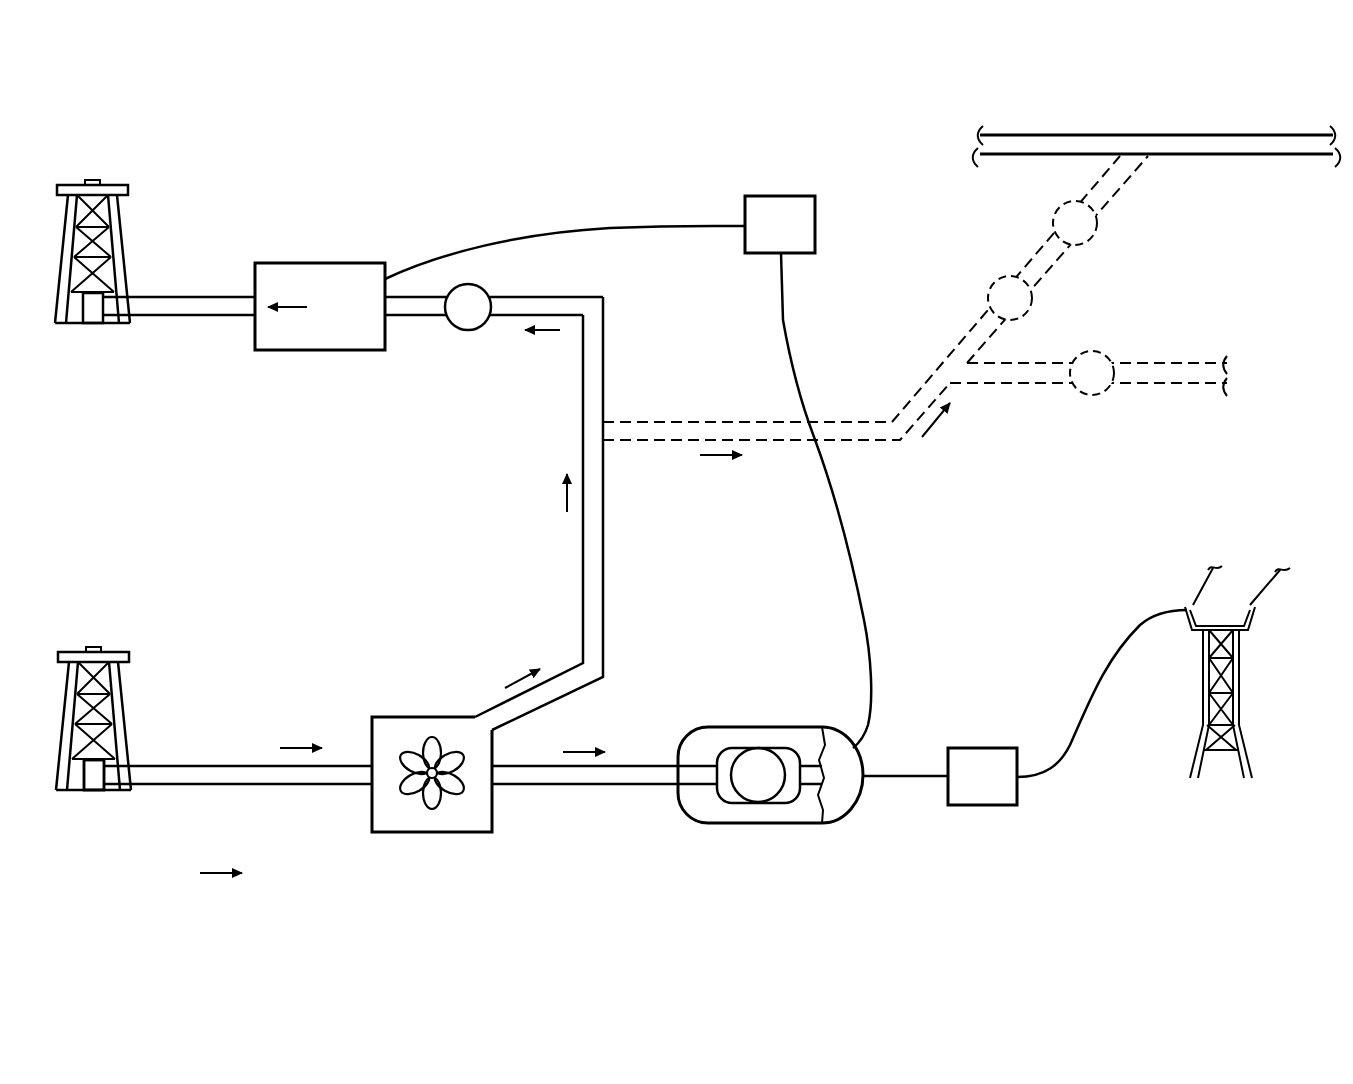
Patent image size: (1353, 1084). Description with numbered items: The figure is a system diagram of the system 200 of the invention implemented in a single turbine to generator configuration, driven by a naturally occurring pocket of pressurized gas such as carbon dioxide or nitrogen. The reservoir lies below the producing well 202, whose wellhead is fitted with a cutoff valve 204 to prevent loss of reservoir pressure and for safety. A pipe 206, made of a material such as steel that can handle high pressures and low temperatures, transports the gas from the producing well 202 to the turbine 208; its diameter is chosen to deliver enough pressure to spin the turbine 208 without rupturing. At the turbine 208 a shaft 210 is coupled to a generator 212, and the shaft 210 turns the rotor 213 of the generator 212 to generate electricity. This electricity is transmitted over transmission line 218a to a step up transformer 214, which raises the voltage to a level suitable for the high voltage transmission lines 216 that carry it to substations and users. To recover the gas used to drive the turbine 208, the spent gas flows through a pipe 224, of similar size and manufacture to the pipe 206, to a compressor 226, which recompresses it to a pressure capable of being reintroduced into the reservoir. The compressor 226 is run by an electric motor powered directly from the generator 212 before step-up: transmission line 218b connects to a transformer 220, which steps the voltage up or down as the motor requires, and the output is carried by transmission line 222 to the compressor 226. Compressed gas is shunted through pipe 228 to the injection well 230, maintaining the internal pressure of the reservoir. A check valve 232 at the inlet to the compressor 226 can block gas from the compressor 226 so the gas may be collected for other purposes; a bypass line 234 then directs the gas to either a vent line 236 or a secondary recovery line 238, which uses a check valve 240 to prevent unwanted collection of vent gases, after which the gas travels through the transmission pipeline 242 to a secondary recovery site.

The system 200 is at (380, 155).
The producing well 202 is at (127, 690).
The cutoff valve 204 is at (93, 794).
The pipe 206 is at (227, 764).
The turbine 208 is at (430, 717).
The shaft 210 is at (587, 785).
The generator 212 is at (795, 823).
The rotor 213 is at (748, 748).
The step up transformer 214 is at (978, 748).
The high voltage transmission lines 216 is at (1100, 685).
The transmission line 218a is at (903, 777).
The transmission line 218b is at (853, 546).
The transformer 220 is at (780, 196).
The transmission line 222 is at (583, 230).
The pipe 224 is at (605, 575).
The compressor 226 is at (318, 350).
The pipe 228 is at (192, 315).
The injection well 230 is at (127, 208).
The check valve 232 is at (474, 330).
The bypass line 234 is at (918, 390).
The vent line 236 is at (1100, 352).
The secondary recovery line 238 is at (990, 287).
The check valve 240 is at (1060, 213).
The transmission pipeline 242 is at (1228, 135).